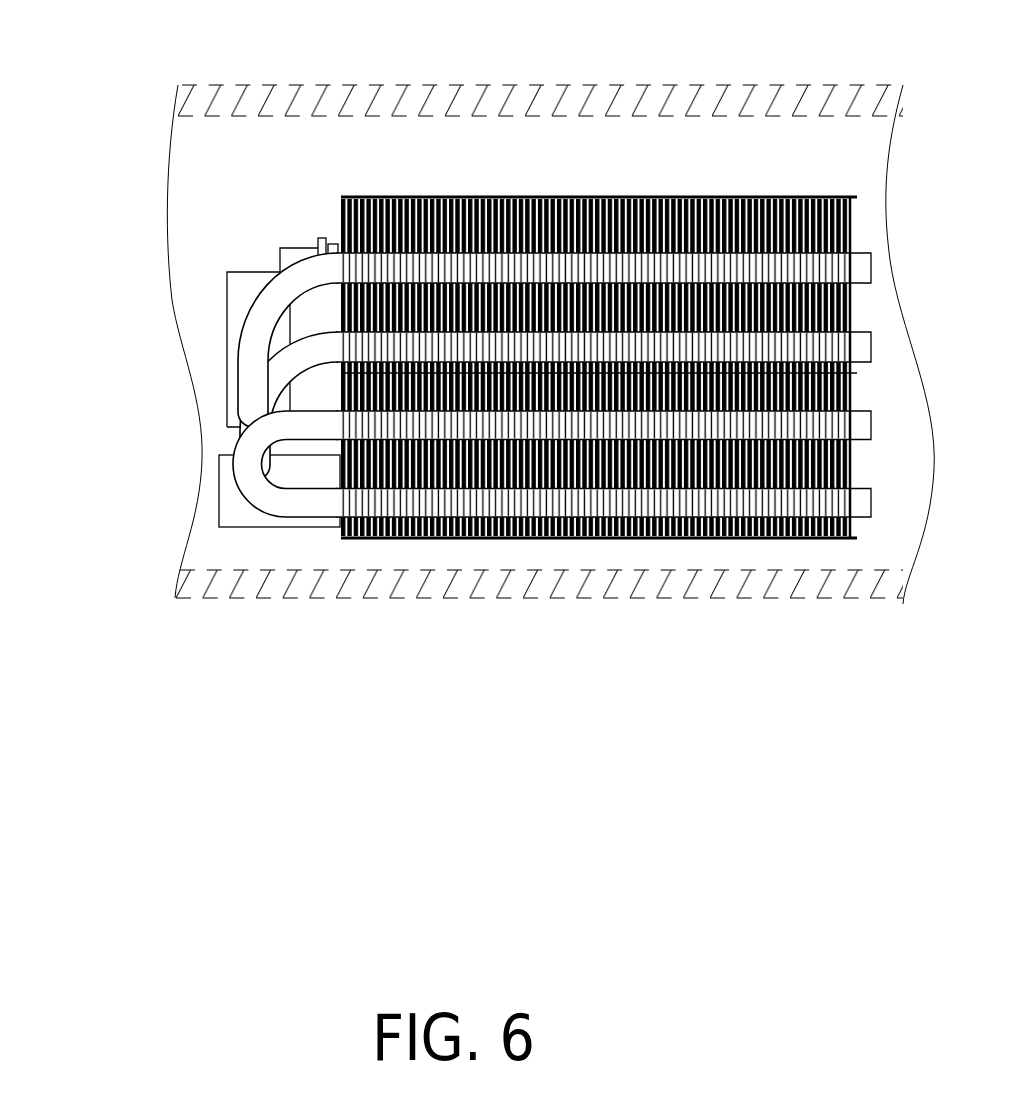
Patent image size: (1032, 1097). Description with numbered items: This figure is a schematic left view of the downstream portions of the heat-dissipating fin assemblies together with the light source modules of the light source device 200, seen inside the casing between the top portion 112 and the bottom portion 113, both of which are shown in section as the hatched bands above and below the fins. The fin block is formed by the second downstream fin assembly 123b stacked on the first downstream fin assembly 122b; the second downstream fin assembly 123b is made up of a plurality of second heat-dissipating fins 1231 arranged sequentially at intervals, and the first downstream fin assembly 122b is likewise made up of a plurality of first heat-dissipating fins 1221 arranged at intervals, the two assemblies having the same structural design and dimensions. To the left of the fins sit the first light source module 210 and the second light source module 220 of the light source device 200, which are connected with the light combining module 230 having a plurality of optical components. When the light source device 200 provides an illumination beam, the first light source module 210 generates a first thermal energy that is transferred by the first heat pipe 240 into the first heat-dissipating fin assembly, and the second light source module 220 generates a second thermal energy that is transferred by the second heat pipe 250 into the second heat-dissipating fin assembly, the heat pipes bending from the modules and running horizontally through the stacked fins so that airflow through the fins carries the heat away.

The top portion 112 is at (362, 100).
The bottom portion 113 is at (352, 585).
The second downstream fin assembly 123b is at (599, 195).
The second heat-dissipating fin 1231 is at (687, 197).
The first downstream fin assembly 122b is at (599, 548).
The first heat-dissipating fin 1221 is at (690, 540).
The light source device 200 is at (92, 247).
The first light source module 210 is at (228, 507).
The second light source module 220 is at (237, 290).
The light combining module 230 is at (287, 247).
The first heat pipe 240 is at (262, 447).
The second heat pipe 250 is at (260, 327).